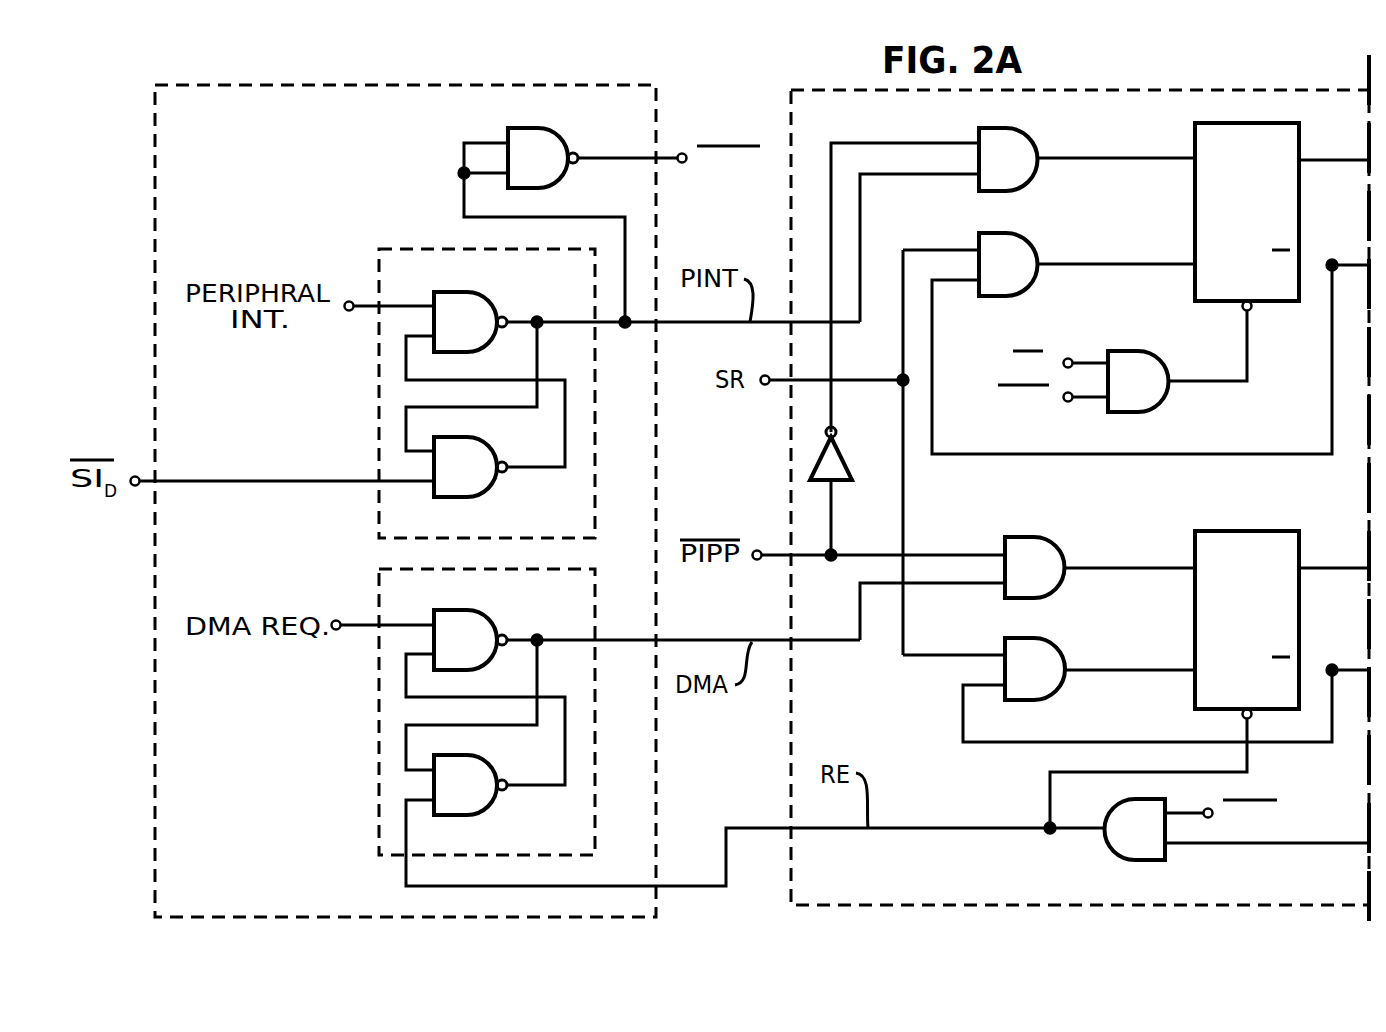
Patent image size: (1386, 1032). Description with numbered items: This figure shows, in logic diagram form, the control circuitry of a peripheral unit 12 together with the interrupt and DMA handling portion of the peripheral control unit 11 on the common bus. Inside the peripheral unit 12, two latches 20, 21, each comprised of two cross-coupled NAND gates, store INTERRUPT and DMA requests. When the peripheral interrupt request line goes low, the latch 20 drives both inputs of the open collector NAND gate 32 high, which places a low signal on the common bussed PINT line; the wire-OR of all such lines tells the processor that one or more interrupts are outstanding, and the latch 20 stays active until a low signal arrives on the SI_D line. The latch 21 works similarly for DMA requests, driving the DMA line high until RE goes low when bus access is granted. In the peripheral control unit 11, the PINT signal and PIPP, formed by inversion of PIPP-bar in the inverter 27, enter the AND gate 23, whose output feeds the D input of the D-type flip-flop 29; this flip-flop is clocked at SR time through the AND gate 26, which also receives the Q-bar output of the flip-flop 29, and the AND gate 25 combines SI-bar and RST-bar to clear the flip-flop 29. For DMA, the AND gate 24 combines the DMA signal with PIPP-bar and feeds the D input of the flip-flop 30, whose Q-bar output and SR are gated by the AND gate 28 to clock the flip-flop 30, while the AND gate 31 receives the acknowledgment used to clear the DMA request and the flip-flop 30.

The peripheral control unit 11 is at (787, 887).
The peripheral unit 12 is at (655, 926).
The latch 20 is at (379, 396).
The latch 21 is at (379, 572).
The AND gate 23 is at (1030, 142).
The AND gate 24 is at (1033, 537).
The AND gate 25 is at (1160, 348).
The AND gate 26 is at (1025, 243).
The inverter 27 is at (836, 455).
The AND gate 28 is at (1057, 650).
The D-type flip-flop 29 is at (1195, 135).
The D-type flip-flop 30 is at (1240, 531).
The AND gate 31 is at (1108, 842).
The open collector NAND gate 32 is at (565, 143).